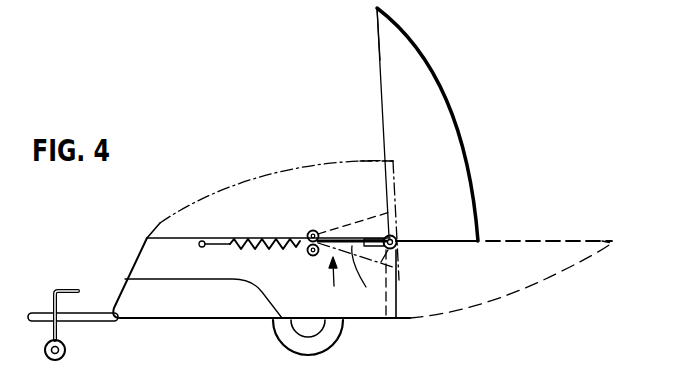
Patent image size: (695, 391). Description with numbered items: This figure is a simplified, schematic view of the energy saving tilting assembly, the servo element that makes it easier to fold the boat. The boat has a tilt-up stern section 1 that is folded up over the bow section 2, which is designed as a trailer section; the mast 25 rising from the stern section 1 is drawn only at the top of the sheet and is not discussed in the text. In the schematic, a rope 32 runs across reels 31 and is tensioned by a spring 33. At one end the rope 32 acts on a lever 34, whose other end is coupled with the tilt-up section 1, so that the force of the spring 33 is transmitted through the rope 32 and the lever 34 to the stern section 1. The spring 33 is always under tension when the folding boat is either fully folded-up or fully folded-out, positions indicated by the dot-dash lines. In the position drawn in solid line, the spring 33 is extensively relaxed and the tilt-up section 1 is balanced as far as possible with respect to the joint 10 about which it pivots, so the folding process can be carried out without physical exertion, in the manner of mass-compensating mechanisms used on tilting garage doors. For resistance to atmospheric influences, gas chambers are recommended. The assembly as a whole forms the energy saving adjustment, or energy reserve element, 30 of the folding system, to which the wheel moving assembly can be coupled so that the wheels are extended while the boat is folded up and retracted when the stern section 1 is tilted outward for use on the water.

The stern section 1 is at (430, 144).
The bow section 2 is at (176, 308).
The joint 10 is at (385, 235).
The mast 25 is at (306, 30).
The energy saving adjustment 30 is at (333, 284).
The reels 31 is at (309, 231).
The rope 32 is at (366, 278).
The spring 33 is at (277, 238).
The lever 34 is at (397, 270).